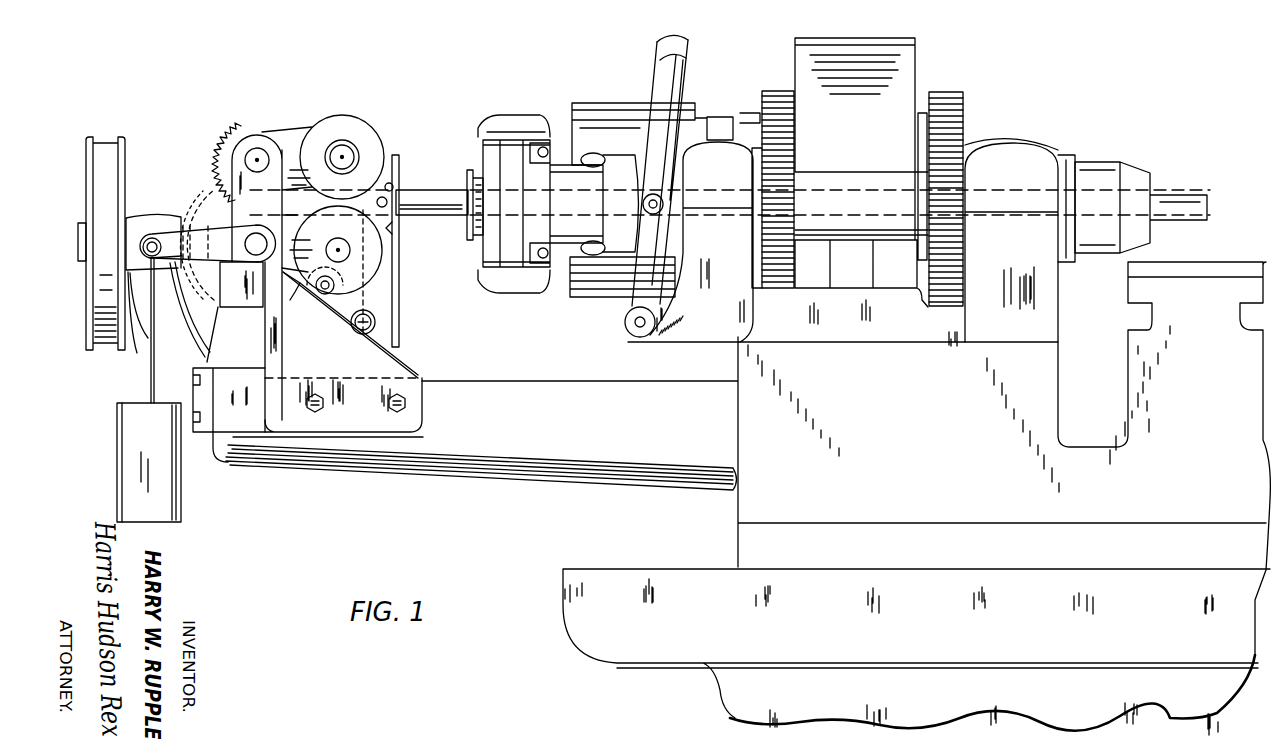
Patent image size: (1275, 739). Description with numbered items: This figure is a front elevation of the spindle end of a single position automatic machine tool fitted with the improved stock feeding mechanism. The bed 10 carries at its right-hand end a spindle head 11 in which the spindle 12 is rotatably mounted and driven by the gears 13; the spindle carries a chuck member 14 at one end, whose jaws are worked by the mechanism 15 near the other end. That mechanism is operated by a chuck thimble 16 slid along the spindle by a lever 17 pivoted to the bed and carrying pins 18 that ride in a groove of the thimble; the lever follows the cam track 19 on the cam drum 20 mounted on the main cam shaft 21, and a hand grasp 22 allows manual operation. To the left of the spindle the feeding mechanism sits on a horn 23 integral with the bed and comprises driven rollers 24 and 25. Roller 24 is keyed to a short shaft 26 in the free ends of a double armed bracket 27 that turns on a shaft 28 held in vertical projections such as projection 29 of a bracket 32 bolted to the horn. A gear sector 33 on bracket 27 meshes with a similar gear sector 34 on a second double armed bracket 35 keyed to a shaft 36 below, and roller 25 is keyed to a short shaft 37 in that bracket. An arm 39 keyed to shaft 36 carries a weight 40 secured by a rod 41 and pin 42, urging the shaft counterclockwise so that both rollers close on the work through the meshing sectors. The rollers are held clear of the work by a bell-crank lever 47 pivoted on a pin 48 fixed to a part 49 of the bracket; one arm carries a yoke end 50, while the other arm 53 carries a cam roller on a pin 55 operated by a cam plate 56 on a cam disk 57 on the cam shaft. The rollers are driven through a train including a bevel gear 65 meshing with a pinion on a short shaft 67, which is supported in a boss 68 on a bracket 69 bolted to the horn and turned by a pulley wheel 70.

The bed 10 is at (767, 485).
The spindle head 11 is at (1035, 160).
The spindle 12 is at (843, 182).
The gears 13 is at (777, 97).
The chuck member 14 is at (1130, 175).
The chuck operating mechanism 15 is at (512, 150).
The chuck thimble 16 is at (623, 167).
The lever 17 is at (628, 307).
The pins 18 is at (657, 205).
The cam track 19 is at (678, 143).
The cam drum 20 is at (603, 113).
The main cam shaft 21 is at (447, 193).
The hand grasp 22 is at (670, 52).
The horn 23 is at (520, 472).
The driven roller 24 is at (333, 123).
The driven roller 25 is at (387, 277).
The short shaft 26 is at (349, 143).
The double armed bracket 27 is at (282, 138).
The shaft 28 is at (247, 155).
The vertical projection 29 is at (233, 131).
The bracket 32 is at (390, 373).
The gear sector 33 is at (215, 152).
The gear sector 34 is at (213, 190).
The double armed bracket 35 is at (295, 290).
The shaft 36 is at (255, 250).
The short shaft 37 is at (386, 253).
The arm 39 is at (168, 237).
The weight 40 is at (128, 455).
The rod 41 is at (148, 383).
The pin 42 is at (173, 273).
The bell-crank lever 47 is at (370, 300).
The pin 48 is at (375, 325).
The part of bracket 49 is at (380, 338).
The yoke end 50 is at (320, 313).
The arm of bell-crank lever 53 is at (397, 225).
The pin 55 is at (392, 200).
The cam plate 56 is at (397, 168).
The cam disk 57 is at (393, 158).
The bevel gear 65 is at (198, 205).
The short shaft 67 is at (77, 237).
The boss 68 is at (137, 220).
The bracket 69 is at (147, 337).
The pulley wheel 70 is at (102, 152).